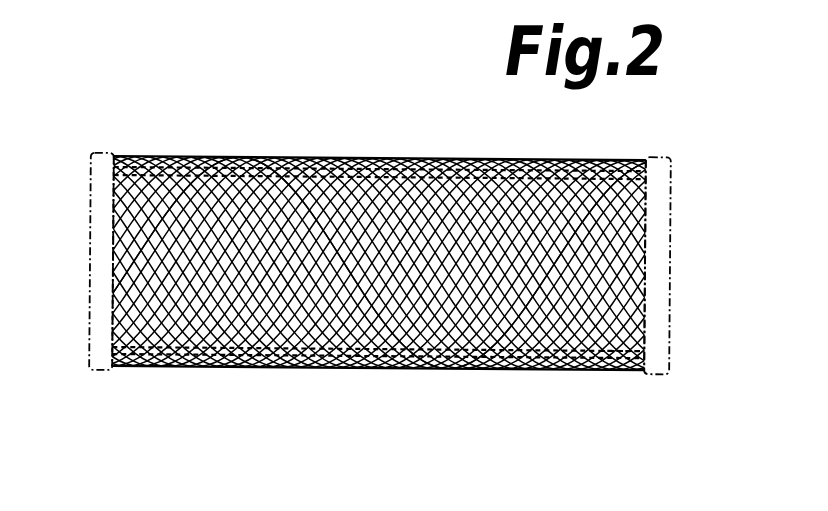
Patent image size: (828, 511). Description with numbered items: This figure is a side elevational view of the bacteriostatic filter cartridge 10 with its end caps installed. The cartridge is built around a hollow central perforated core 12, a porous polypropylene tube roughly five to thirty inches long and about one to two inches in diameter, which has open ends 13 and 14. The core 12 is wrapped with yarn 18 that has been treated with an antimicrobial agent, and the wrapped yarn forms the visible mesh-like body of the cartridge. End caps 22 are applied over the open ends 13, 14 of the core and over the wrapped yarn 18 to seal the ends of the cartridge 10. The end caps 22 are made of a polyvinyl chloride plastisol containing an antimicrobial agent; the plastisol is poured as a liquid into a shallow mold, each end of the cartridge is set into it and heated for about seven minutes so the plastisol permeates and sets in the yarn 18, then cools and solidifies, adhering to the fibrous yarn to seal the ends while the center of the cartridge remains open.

The bacteriostatic filter cartridge 10 is at (414, 221).
The hollow central perforated core 12 is at (215, 365).
The open end 13 is at (574, 378).
The open end 14 is at (156, 397).
The yarn 18 is at (344, 225).
The end caps 22 is at (90, 250).